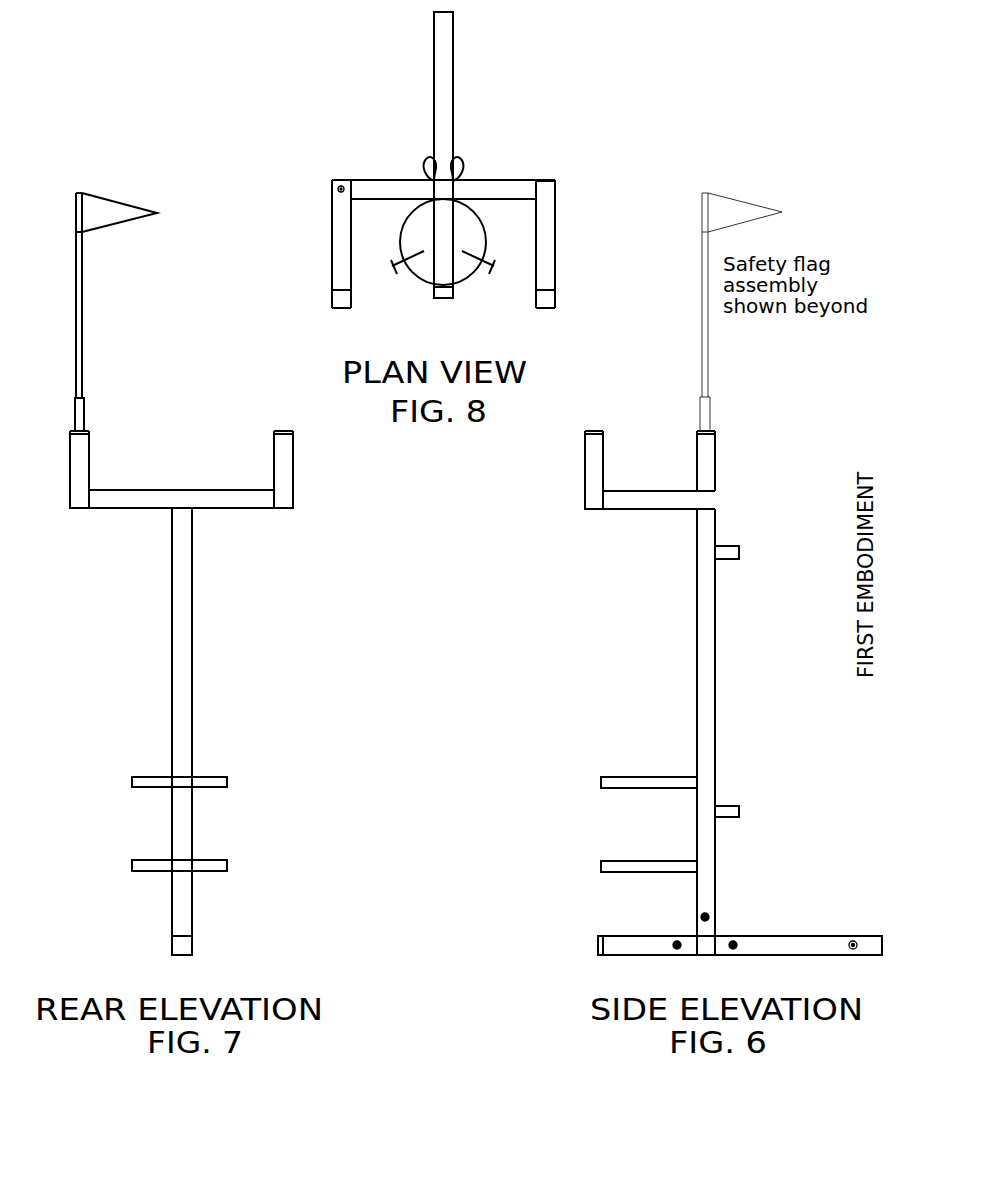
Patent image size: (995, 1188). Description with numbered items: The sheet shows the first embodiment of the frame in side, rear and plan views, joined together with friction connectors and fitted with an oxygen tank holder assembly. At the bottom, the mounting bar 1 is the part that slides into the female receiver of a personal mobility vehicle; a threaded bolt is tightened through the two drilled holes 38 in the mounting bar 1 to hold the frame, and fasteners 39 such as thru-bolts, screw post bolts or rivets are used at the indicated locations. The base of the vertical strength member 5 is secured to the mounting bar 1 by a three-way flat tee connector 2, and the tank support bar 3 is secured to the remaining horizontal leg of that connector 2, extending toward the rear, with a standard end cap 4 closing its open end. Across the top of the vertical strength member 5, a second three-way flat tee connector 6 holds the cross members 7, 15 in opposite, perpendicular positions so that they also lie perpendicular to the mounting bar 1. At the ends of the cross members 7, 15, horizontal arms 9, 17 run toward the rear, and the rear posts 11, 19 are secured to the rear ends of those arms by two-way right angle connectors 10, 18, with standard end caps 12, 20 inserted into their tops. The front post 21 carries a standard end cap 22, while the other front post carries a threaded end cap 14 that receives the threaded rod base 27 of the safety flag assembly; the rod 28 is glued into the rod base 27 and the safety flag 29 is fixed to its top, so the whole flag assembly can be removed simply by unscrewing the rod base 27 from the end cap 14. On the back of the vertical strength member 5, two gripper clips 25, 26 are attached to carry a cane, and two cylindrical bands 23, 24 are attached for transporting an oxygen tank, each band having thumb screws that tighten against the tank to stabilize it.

In FIG. 8, the mounting bar 1 is at (474, 149).
In FIG. 6, the mounting bar 1 is at (742, 920).
In FIG. 6, the three-way flat tee connector 2 is at (729, 971).
In FIG. 8, the tank support bar 3 is at (454, 248).
In FIG. 6, the tank support bar 3 is at (650, 915).
In FIG. 8, the end cap 4 is at (459, 309).
In FIG. 7, the end cap 4 is at (195, 945).
In FIG. 6, the end cap 4 is at (569, 960).
In FIG. 7, the vertical strength member 5 is at (209, 722).
In FIG. 6, the vertical strength member 5 is at (732, 722).
In FIG. 8, the three-way flat tee connector 6 is at (404, 178).
In FIG. 7, the three-way flat tee connector 6 is at (199, 480).
In FIG. 6, the three-way flat tee connector 6 is at (736, 499).
In FIG. 8, the cross member 7 is at (373, 209).
In FIG. 7, the cross member 7 is at (130, 521).
In FIG. 8, the horizontal arm 9 is at (319, 244).
In FIG. 7, the two-way right angle connector 10 is at (54, 517).
In FIG. 7, the rear post 11 is at (112, 458).
In FIG. 8, the end cap 12 is at (306, 316).
In FIG. 7, the end cap 12 is at (113, 404).
In FIG. 8, the threaded end cap 14 is at (304, 164).
In FIG. 8, the cross member 15 is at (443, 162).
In FIG. 7, the cross member 15 is at (240, 521).
In FIG. 8, the horizontal arm 17 is at (575, 244).
In FIG. 6, the horizontal arm 17 is at (646, 525).
In FIG. 7, the two-way right angle connector 18 is at (321, 510).
In FIG. 6, the two-way right angle connector 18 is at (564, 523).
In FIG. 7, the rear post 19 is at (253, 458).
In FIG. 6, the rear post 19 is at (564, 461).
In FIG. 8, the end cap 20 is at (580, 311).
In FIG. 7, the end cap 20 is at (258, 413).
In FIG. 6, the end cap 20 is at (576, 416).
In FIG. 6, the front post 21 is at (736, 461).
In FIG. 8, the end cap 22 is at (572, 171).
In FIG. 6, the end cap 22 is at (730, 416).
In FIG. 8, the cylindrical band 23 is at (432, 286).
In FIG. 7, the cylindrical band 23 is at (204, 759).
In FIG. 6, the cylindrical band 23 is at (626, 759).
In FIG. 7, the cylindrical band 24 is at (200, 847).
In FIG. 6, the cylindrical band 24 is at (623, 851).
In FIG. 8, the gripper clip 25 is at (415, 155).
In FIG. 6, the gripper clip 25 is at (754, 535).
In FIG. 6, the gripper clip 26 is at (755, 793).
In FIG. 7, the threaded rod base 27 is at (52, 405).
In FIG. 7, the rod 28 is at (50, 295).
In FIG. 7, the safety flag 29 is at (127, 226).
In FIG. 6, the drilled holes 38 is at (833, 925).
In FIG. 6, the fasteners 39 is at (726, 892).